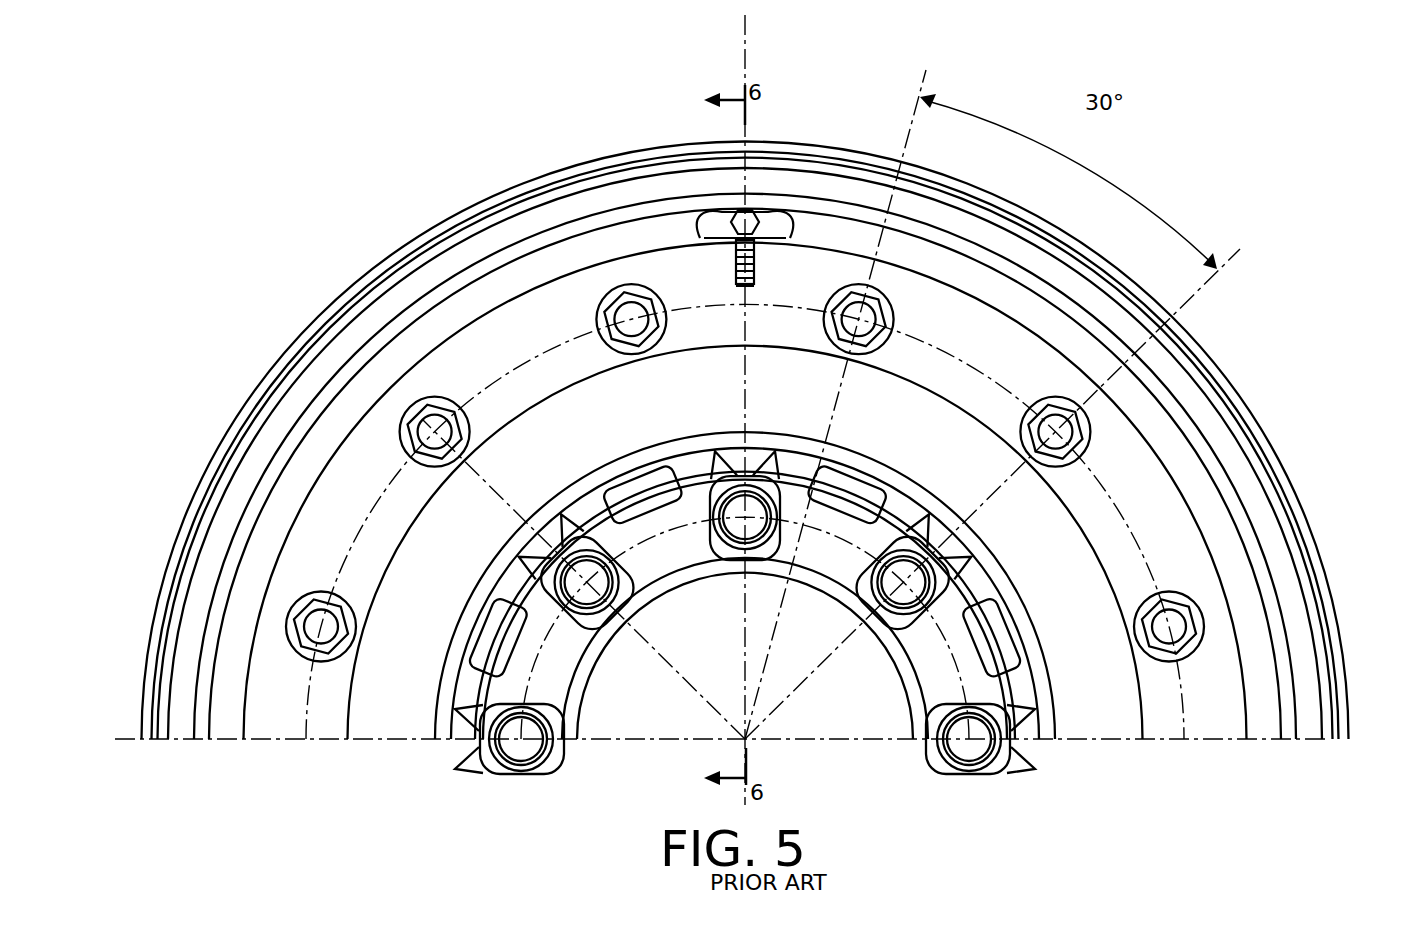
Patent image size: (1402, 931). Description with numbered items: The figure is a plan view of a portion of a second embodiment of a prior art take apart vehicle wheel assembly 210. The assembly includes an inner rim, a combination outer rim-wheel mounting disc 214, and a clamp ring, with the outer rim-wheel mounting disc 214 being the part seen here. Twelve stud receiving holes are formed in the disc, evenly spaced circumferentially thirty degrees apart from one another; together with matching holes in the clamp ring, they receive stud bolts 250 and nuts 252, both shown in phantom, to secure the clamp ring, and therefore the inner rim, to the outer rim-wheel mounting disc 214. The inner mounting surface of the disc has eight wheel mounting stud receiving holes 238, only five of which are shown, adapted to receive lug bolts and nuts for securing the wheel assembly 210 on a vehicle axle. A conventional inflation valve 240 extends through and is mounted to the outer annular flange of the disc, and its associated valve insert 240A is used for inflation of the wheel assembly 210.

The prior art take apart vehicle wheel assembly 210 is at (787, 112).
The outer rim-wheel mounting disc 214 is at (1272, 418).
The wheel mounting stud receiving holes 238 is at (640, 587).
The inflation valve 240 is at (729, 235).
The valve insert 240A is at (746, 292).
The stud bolts 250 is at (1158, 618).
The nuts 252 is at (1197, 617).